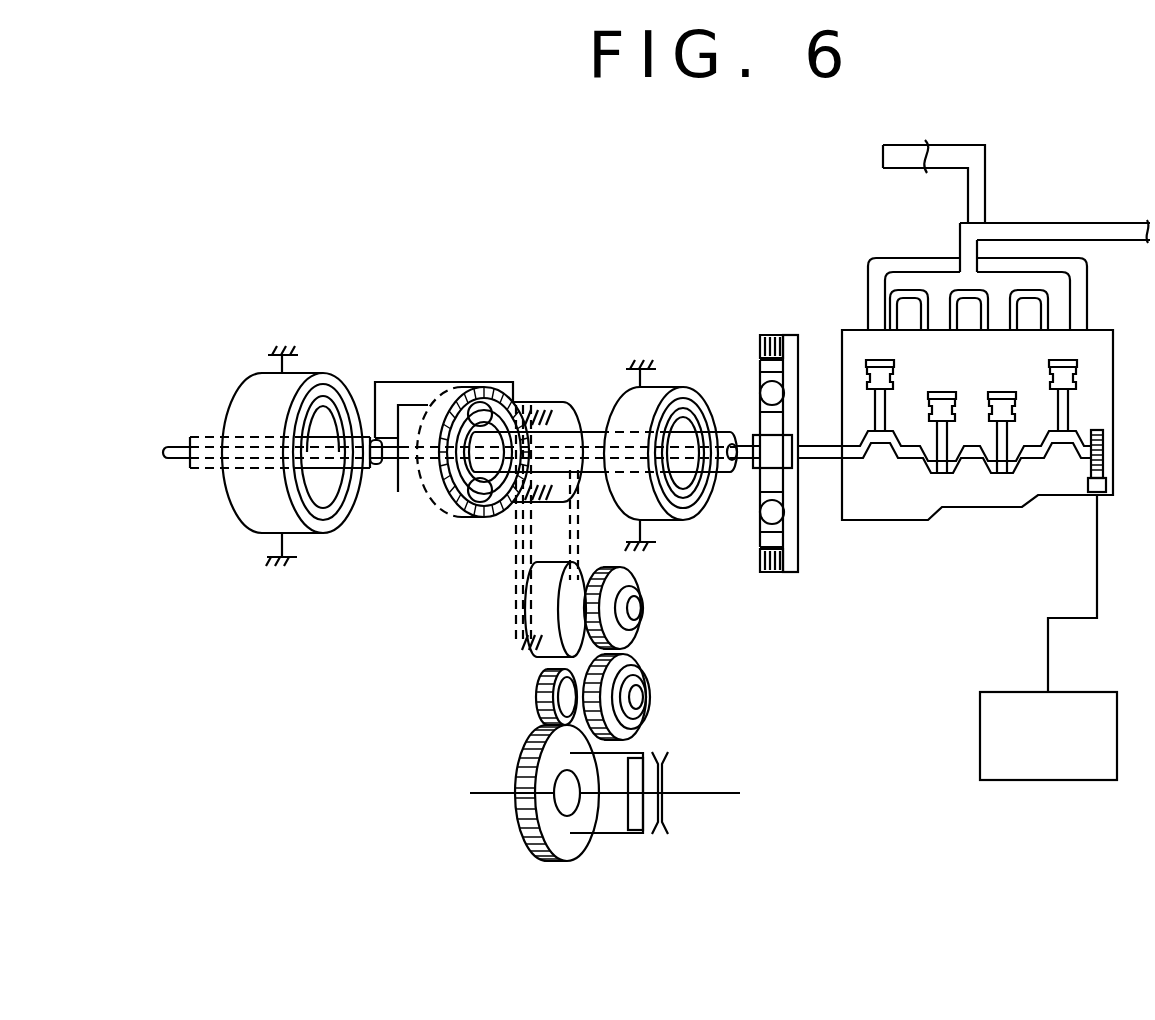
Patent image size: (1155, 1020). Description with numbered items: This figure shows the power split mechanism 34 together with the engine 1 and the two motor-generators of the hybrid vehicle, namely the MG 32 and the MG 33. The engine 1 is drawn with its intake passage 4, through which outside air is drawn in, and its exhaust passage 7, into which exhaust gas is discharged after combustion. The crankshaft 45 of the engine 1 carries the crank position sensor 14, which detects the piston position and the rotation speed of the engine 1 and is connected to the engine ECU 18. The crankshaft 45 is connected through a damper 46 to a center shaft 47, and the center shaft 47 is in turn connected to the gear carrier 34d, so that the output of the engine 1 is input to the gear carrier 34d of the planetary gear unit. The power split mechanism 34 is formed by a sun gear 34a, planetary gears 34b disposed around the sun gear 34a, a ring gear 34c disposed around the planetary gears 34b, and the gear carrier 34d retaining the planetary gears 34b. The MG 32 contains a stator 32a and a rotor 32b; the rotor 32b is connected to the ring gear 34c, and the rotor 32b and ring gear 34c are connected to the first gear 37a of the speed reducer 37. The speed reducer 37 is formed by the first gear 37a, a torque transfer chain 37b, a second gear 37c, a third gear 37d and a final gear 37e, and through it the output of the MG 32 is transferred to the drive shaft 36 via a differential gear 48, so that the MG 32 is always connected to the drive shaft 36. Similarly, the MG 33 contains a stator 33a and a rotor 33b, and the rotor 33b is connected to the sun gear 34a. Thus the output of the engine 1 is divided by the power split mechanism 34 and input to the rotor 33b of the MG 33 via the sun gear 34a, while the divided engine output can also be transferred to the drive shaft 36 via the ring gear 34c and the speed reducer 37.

The engine 1 is at (972, 500).
The intake passage 4 is at (982, 185).
The exhaust passage 7 is at (1114, 232).
The crank position sensor 14 is at (1090, 490).
The engine ECU 18 is at (1070, 782).
The motor-generator (MG) 32 is at (393, 252).
The stator 32a is at (257, 385).
The rotor 32b is at (318, 418).
The motor-generator (MG) 33 is at (770, 270).
The stator 33a is at (648, 397).
The rotor 33b is at (687, 420).
The power split mechanism 34 is at (590, 280).
The sun gear 34a is at (415, 400).
The planetary gears 34b is at (480, 400).
The ring gear 34c is at (435, 397).
The gear carrier 34d is at (507, 387).
The drive shaft 36 is at (705, 792).
The speed reducer 37 is at (388, 565).
The first gear 37a is at (530, 515).
The torque transfer chain 37b is at (560, 617).
The second gear 37c is at (545, 650).
The third gear 37d is at (560, 700).
The final gear 37e is at (535, 752).
The crankshaft 45 is at (857, 450).
The damper 46 is at (778, 418).
The center shaft 47 is at (398, 492).
The differential gear 48 is at (648, 832).